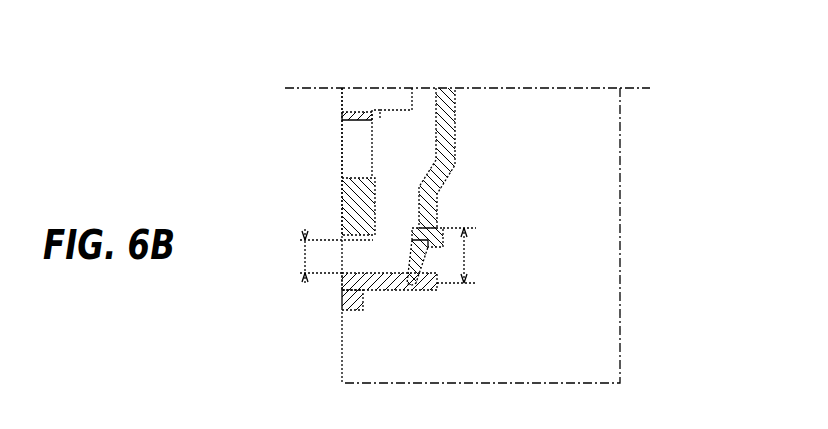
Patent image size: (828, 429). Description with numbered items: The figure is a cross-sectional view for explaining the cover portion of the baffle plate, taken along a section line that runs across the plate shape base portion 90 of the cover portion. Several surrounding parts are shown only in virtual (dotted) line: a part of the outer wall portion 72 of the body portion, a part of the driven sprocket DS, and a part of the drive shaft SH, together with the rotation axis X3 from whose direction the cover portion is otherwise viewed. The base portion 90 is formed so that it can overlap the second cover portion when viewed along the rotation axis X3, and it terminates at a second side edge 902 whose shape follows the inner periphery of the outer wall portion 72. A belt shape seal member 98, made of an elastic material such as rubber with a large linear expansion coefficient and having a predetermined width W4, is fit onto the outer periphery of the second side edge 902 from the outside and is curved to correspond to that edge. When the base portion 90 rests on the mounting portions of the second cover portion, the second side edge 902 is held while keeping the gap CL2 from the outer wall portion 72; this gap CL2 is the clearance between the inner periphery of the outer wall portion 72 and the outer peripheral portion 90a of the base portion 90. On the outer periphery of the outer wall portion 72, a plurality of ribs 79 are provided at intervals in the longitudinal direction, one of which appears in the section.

The drive shaft SH is at (397, 98).
The rotation axis X3 is at (485, 228).
The driven sprocket DS is at (340, 164).
The base portion 90 is at (457, 132).
The outer peripheral portion 90a is at (420, 198).
The second side edge 902 is at (432, 232).
The seal member 98 is at (406, 262).
The width W4 is at (478, 255).
The gap CL2 is at (309, 256).
The outer wall portion 72 is at (394, 291).
The rib 79 is at (348, 297).